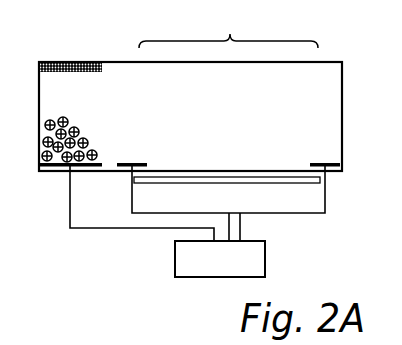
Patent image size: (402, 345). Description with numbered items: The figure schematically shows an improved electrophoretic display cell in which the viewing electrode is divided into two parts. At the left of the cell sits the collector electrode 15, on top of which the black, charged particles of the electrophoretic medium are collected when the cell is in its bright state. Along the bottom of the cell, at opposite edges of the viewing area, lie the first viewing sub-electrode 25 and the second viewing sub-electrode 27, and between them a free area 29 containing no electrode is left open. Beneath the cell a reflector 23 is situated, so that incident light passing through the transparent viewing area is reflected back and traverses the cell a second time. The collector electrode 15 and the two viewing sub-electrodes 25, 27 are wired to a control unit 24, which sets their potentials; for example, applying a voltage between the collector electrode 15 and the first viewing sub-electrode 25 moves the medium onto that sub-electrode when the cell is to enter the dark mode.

The collector electrode 15 is at (69, 201).
The reflector 23 is at (288, 183).
The control unit 24 is at (266, 254).
The first viewing sub-electrode 25 is at (132, 164).
The second viewing sub-electrode 27 is at (330, 163).
The free area 29 is at (228, 28).